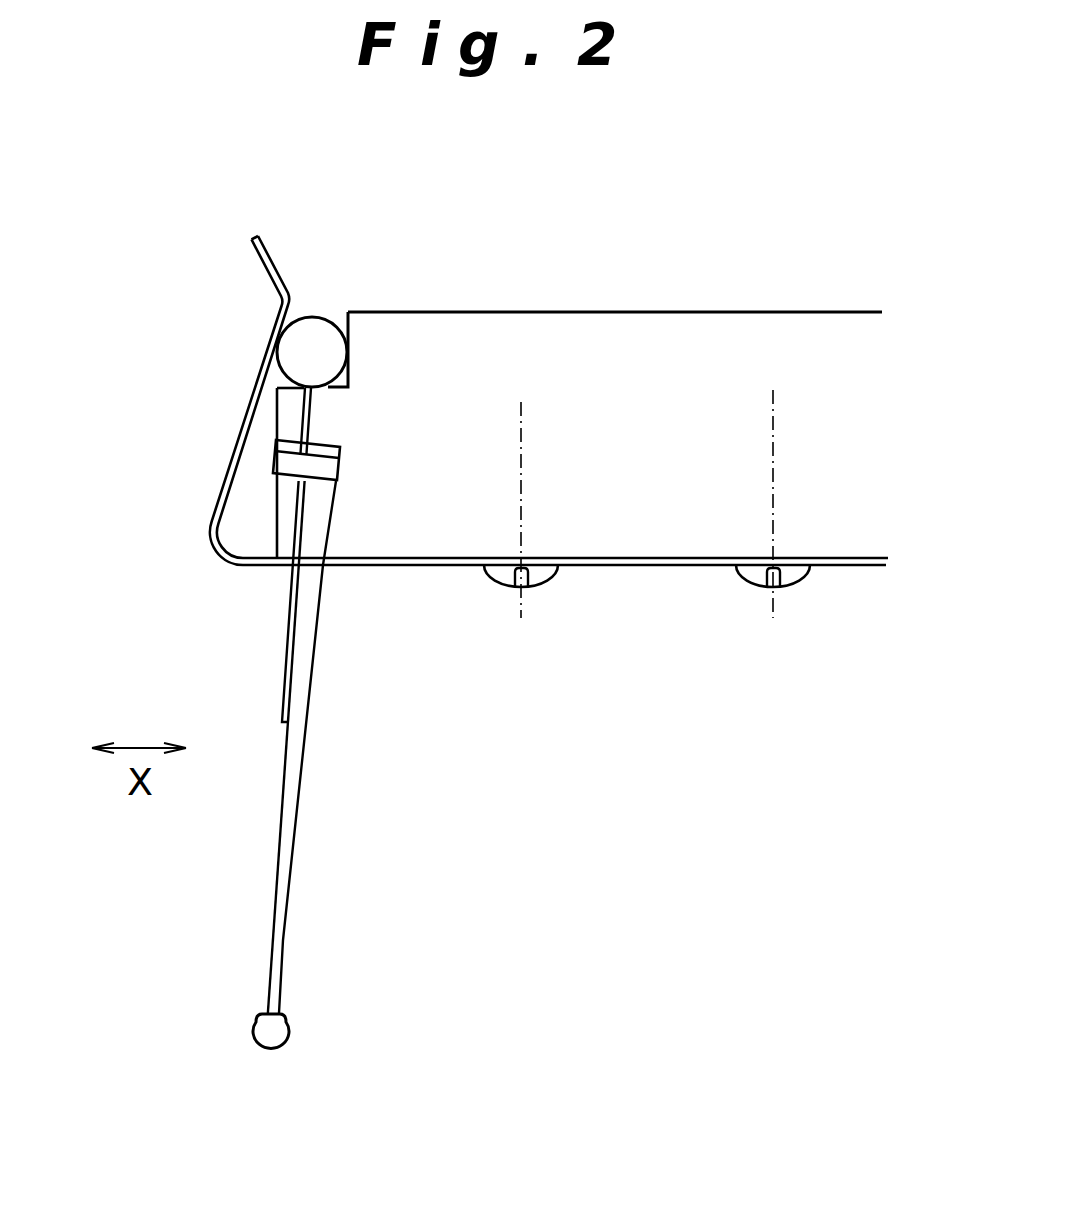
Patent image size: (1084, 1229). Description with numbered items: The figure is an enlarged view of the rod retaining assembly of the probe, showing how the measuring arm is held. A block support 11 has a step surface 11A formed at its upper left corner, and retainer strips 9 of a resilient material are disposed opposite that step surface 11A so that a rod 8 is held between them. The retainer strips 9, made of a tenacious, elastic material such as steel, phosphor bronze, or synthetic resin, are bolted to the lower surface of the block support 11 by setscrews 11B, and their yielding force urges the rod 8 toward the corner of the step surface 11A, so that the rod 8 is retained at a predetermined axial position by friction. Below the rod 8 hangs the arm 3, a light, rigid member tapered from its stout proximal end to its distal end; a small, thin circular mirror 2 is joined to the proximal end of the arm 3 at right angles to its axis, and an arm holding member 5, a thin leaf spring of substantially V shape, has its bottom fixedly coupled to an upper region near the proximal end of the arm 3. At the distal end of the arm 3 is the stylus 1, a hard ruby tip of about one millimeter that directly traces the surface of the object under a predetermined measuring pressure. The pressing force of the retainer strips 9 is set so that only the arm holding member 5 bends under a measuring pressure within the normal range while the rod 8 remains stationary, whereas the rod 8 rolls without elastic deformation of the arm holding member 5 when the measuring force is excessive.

The stylus 1 is at (287, 1027).
The mirror 2 is at (327, 437).
The arm 3 is at (305, 745).
The arm holding member 5 is at (292, 600).
The rod 8 is at (318, 338).
The retainer strips 9 is at (222, 467).
The block support 11 is at (598, 340).
The step surface 11A is at (337, 387).
The setscrews 11B is at (548, 587).